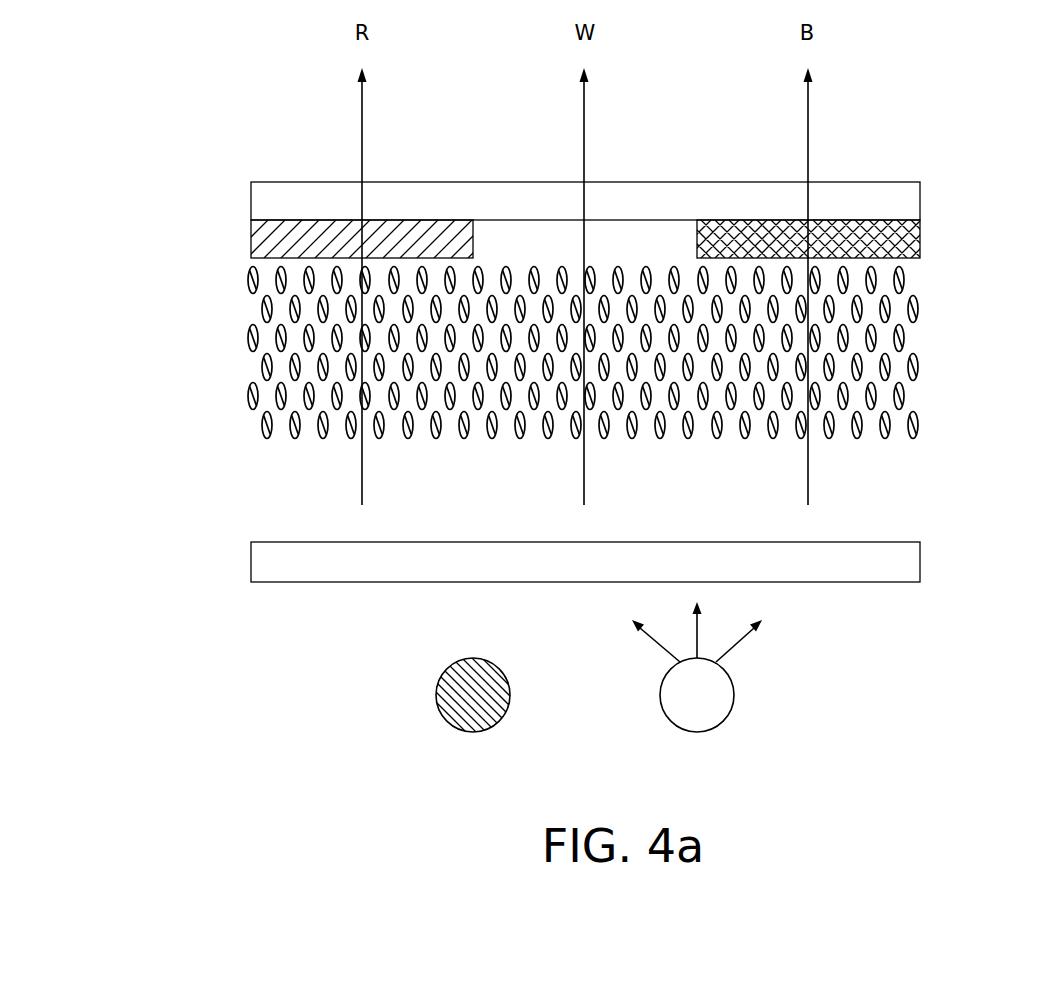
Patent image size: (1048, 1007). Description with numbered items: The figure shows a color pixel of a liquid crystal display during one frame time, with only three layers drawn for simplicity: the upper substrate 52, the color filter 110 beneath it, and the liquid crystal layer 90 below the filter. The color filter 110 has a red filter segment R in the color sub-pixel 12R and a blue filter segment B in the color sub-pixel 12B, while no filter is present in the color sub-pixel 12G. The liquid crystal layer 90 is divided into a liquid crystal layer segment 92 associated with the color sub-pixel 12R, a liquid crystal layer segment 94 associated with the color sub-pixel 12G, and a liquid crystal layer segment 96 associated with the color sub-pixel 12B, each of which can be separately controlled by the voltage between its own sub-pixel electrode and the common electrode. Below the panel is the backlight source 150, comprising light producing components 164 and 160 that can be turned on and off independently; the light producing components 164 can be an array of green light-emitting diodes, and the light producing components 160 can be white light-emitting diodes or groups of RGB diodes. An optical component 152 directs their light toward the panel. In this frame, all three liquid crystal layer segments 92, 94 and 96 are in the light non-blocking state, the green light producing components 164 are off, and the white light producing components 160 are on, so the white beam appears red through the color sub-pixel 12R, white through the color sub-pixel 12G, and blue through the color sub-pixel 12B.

The color sub-pixel 12R is at (399, 113).
The color sub-pixel 12G is at (630, 108).
The color sub-pixel 12B is at (845, 106).
The upper substrate 52 is at (291, 182).
The color filter 110 is at (233, 238).
The liquid crystal layer 90 is at (203, 355).
The liquid crystal layer segment 92 is at (318, 475).
The liquid crystal layer segment 94 is at (558, 473).
The liquid crystal layer segment 96 is at (782, 473).
The backlight source 150 is at (636, 652).
The optical component 152 is at (372, 582).
The light producing components 160 is at (697, 682).
The light producing components 164 is at (474, 710).